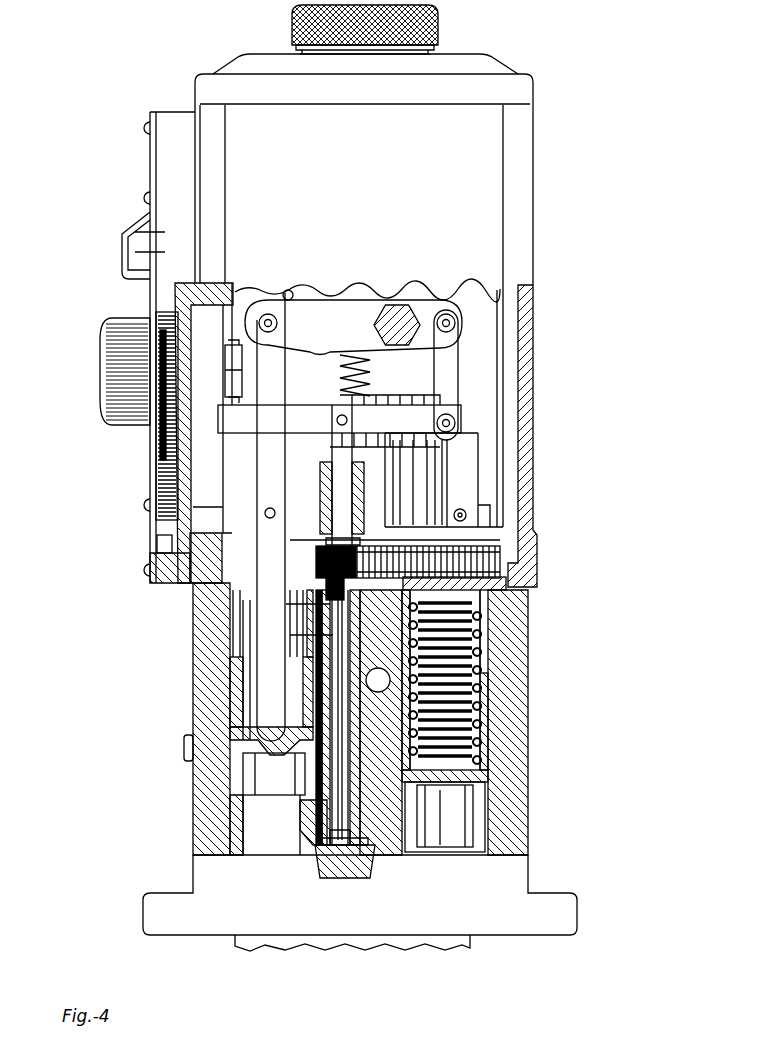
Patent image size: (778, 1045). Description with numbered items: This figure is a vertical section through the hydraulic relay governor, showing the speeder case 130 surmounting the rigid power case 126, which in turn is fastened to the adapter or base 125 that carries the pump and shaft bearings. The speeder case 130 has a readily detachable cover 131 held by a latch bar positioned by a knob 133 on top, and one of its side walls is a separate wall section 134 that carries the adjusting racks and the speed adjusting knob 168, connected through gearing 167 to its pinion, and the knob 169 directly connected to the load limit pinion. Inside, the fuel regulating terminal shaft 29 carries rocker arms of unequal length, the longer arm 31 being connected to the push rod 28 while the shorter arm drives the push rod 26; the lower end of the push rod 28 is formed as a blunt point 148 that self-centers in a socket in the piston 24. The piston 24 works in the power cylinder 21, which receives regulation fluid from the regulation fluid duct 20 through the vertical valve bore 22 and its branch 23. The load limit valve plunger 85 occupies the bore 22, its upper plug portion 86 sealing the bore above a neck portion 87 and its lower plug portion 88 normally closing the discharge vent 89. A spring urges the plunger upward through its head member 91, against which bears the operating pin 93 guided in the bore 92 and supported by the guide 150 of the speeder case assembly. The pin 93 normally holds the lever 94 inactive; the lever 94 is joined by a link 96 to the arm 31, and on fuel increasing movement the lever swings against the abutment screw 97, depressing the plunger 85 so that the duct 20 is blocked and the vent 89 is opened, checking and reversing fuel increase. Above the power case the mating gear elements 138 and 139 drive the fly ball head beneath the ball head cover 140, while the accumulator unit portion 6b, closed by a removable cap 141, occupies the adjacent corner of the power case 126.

The knob 133 is at (291, 27).
The wall section 134 is at (168, 112).
The cover 131 is at (492, 90).
The speeder case 130 is at (536, 358).
The knob 169 is at (120, 262).
The fuel regulating terminal shaft 29 is at (402, 306).
The longer arm 31 is at (353, 343).
The abutment screw 97 is at (226, 396).
The link 96 is at (447, 375).
The speed adjusting knob 168 is at (104, 395).
The lever 94 is at (339, 421).
The guide 150 is at (318, 470).
The ball head cover 140 is at (422, 460).
The gearing 167 is at (152, 453).
The push rod 28 is at (271, 517).
The bore 92 is at (364, 490).
The operating pin 93 is at (338, 497).
The push rod 26 is at (437, 480).
The head member 91 is at (356, 538).
The gear element 138 is at (316, 558).
The gear element 139 is at (477, 554).
The removable cap 141 is at (527, 583).
The valve plunger 85 is at (294, 604).
The plug portion 86 is at (296, 634).
The power case 126 is at (194, 668).
The piston 24 is at (231, 697).
The regulation fluid duct 20 is at (330, 697).
The valve bore 22 is at (357, 740).
The blunt point 148 is at (230, 745).
The power cylinder 21 is at (246, 773).
The branch 23 is at (315, 820).
The plug portion 88 is at (316, 856).
The discharge vent 89 is at (366, 870).
The neck portion 87 is at (396, 857).
The accumulator unit portion 6b is at (445, 721).
The adapter or base 125 is at (515, 878).